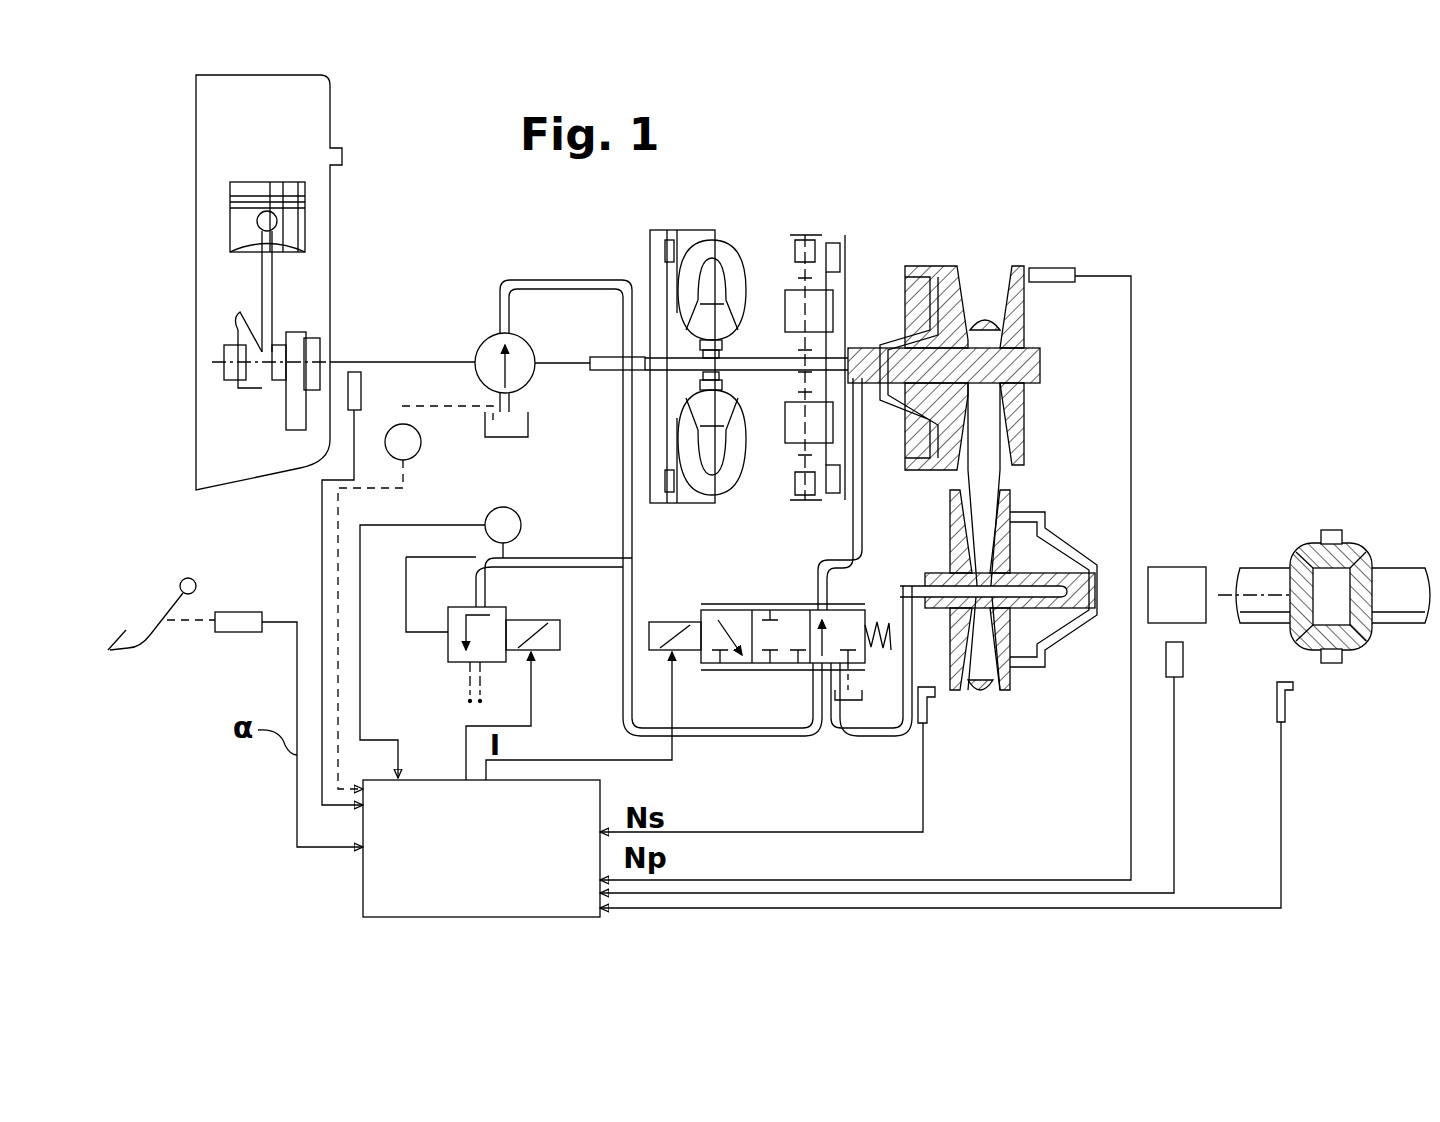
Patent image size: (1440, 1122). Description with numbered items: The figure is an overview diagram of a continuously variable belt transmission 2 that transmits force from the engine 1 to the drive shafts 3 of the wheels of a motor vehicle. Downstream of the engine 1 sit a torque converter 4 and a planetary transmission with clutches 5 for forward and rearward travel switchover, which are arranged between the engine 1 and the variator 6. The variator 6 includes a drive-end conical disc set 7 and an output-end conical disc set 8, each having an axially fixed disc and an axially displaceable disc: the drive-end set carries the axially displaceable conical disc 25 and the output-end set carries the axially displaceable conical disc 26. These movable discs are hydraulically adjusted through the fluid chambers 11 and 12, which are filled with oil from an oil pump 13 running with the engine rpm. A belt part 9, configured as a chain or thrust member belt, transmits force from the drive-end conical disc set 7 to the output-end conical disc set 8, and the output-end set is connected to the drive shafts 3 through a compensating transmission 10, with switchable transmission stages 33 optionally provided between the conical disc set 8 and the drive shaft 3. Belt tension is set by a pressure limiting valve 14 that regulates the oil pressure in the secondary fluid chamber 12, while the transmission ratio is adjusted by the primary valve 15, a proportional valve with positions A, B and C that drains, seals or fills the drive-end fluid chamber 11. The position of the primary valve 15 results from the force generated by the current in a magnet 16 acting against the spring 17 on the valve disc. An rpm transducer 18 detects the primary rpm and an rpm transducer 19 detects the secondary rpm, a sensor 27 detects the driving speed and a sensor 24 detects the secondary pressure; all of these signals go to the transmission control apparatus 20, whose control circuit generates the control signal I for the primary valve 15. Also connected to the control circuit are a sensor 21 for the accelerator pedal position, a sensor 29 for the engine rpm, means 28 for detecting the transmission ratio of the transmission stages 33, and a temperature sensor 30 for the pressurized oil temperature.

The engine 1 is at (312, 112).
The continuously variable belt transmission 2 is at (1040, 168).
The drive shafts 3 is at (1333, 530).
The torque converter 4 is at (725, 252).
The clutches 5 is at (836, 245).
The variator 6 is at (1045, 368).
The drive-end conical disc set 7 is at (990, 297).
The output-end conical disc set 8 is at (993, 703).
The belt part 9 is at (993, 481).
The compensating transmission 10 is at (1400, 572).
The drive-end fluid chamber 11 is at (940, 280).
The output-end fluid chamber 12 is at (1048, 546).
The oil pump 13 is at (493, 352).
The pressure limiting valve 14 is at (448, 636).
The primary valve 15 is at (762, 658).
The magnet 16 is at (661, 630).
The spring 17 is at (875, 626).
The rpm transducer 18 is at (1052, 276).
The rpm transducer 19 is at (931, 700).
The transmission control apparatus 20 is at (481, 848).
The accelerator pedal position sensor 21 is at (240, 612).
The secondary pressure sensor 24 is at (518, 520).
The axially displaceable conical disc 25 is at (960, 275).
The axially displaceable conical disc 26 is at (1005, 684).
The driving speed sensor 27 is at (1290, 705).
The transmission ratio detecting means 28 is at (1183, 660).
The engine rpm sensor 29 is at (362, 388).
The temperature sensor 30 is at (421, 444).
The switchable transmission stages 33 is at (1175, 568).